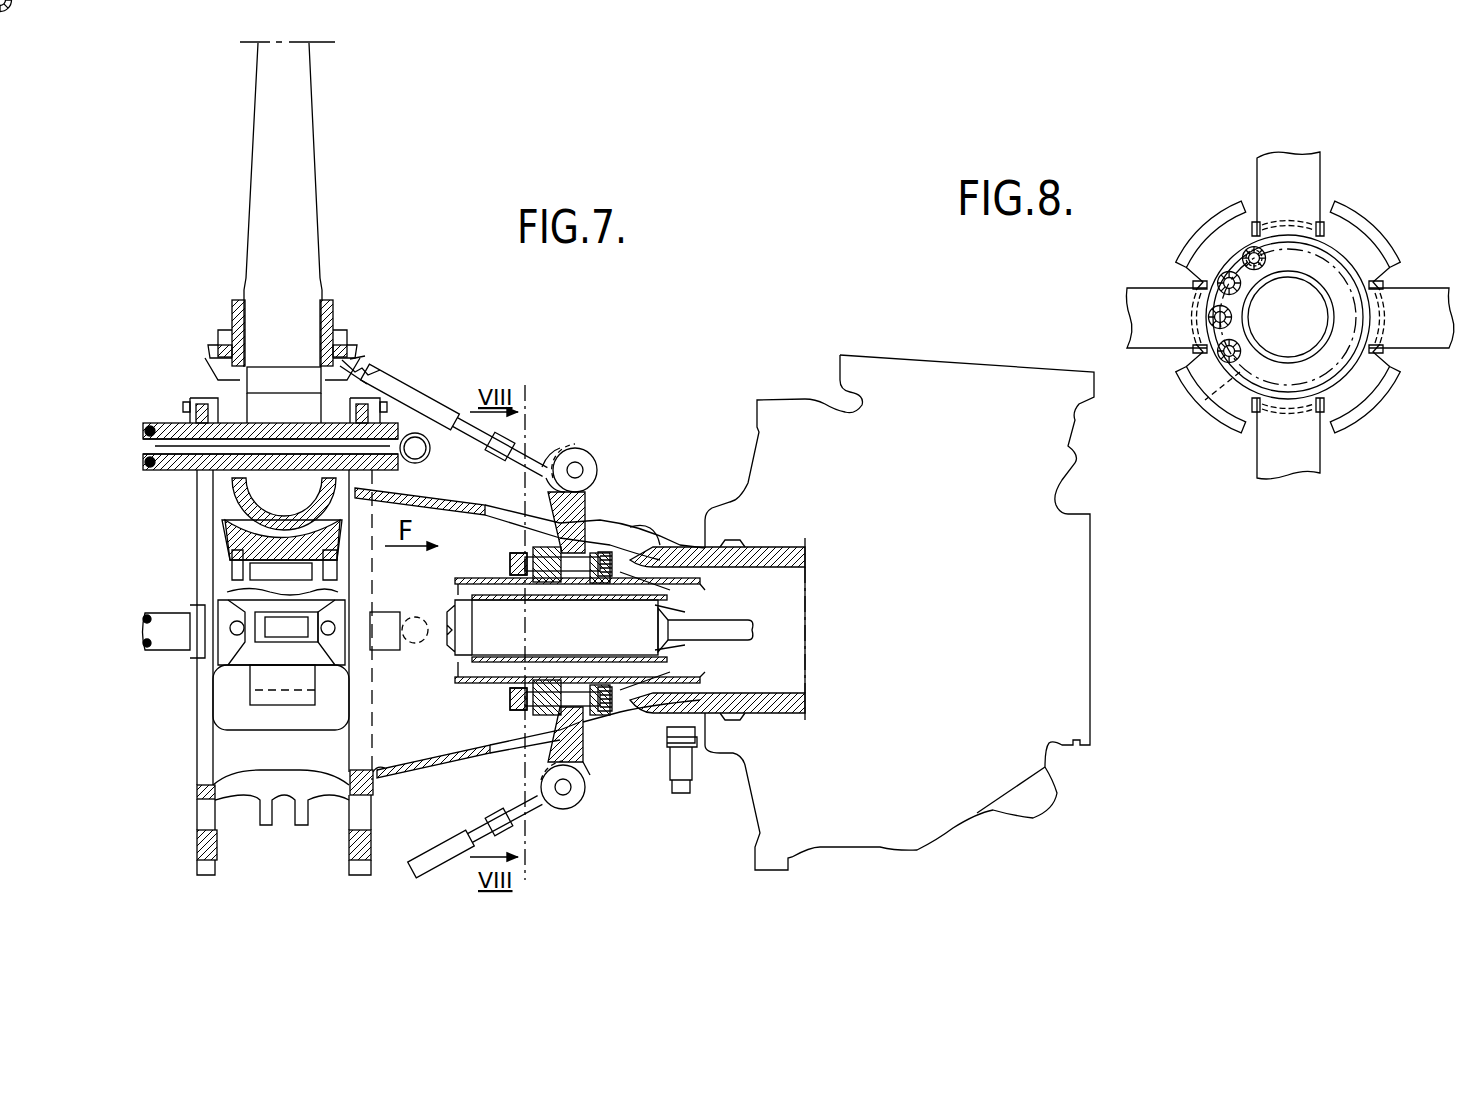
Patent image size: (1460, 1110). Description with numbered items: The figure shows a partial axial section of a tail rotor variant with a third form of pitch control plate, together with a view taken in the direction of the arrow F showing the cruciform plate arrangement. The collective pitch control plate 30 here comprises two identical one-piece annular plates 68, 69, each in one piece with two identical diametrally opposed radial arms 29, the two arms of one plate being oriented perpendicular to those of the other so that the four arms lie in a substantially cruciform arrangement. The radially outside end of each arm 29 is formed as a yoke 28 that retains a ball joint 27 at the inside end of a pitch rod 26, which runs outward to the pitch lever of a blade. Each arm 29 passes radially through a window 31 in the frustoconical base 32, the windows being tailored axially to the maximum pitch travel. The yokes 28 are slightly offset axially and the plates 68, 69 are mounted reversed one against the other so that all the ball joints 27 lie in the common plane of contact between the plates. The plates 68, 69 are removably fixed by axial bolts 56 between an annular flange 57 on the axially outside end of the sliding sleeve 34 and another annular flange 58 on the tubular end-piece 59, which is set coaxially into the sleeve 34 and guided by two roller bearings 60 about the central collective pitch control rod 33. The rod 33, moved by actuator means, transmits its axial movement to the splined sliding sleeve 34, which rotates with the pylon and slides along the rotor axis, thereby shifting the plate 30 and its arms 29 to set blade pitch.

In FIG. 7, the pitch rod 26 is at (428, 405).
In FIG. 7, the ball joint 27 is at (572, 465).
In FIG. 7, the yoke 28 is at (590, 780).
In FIG. 7, the radial arm 29 is at (582, 515).
In FIG. 8, the radial arm 29 is at (1286, 170).
In FIG. 7, the collective pitch control plate 30 is at (585, 722).
In FIG. 7, the window 31 is at (598, 548).
In FIG. 8, the window 31 is at (1255, 222).
In FIG. 7, the frustoconical base 32 is at (462, 500).
In FIG. 8, the frustoconical base 32 is at (1218, 405).
In FIG. 7, the collective pitch control rod 33 is at (725, 632).
In FIG. 7, the sliding sleeve 34 is at (695, 580).
In FIG. 7, the axial bolt 56 is at (540, 700).
In FIG. 8, the axial bolt 56 is at (1254, 255).
In FIG. 7, the annular flange 57 is at (632, 530).
In FIG. 7, the annular flange 58 is at (530, 552).
In FIG. 7, the tubular end-piece 59 is at (524, 597).
In FIG. 7, the roller bearing 60 is at (622, 590).
In FIG. 7, the one-piece annular plate 68 is at (518, 566).
In FIG. 8, the one-piece annular plate 68 is at (1205, 400).
In FIG. 7, the one-piece annular plate 69 is at (560, 712).
In FIG. 8, the one-piece annular plate 69 is at (1240, 262).